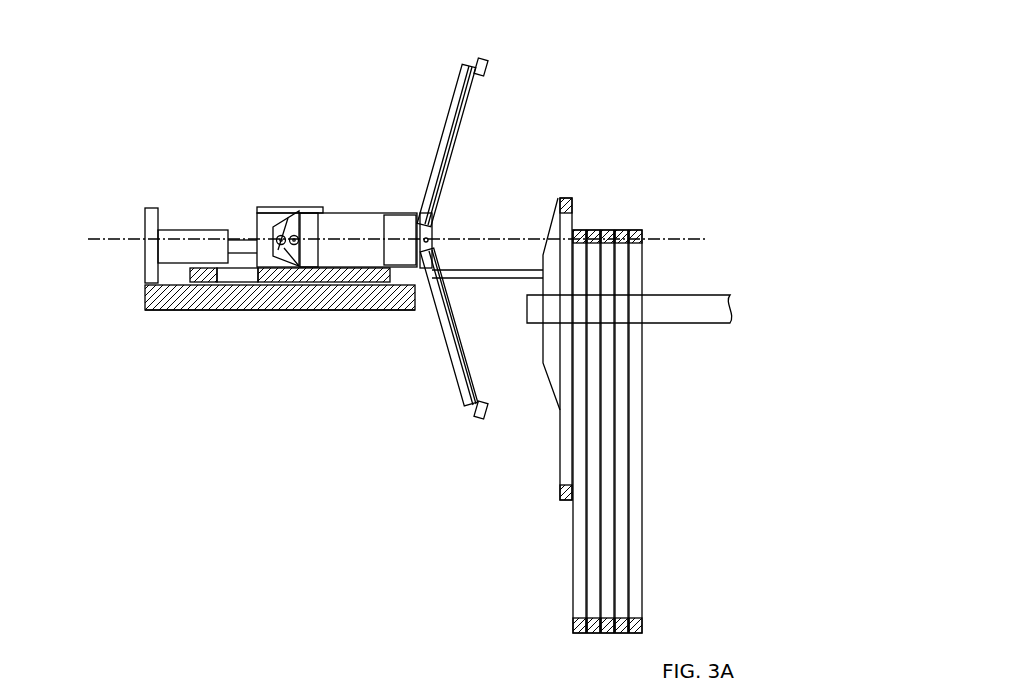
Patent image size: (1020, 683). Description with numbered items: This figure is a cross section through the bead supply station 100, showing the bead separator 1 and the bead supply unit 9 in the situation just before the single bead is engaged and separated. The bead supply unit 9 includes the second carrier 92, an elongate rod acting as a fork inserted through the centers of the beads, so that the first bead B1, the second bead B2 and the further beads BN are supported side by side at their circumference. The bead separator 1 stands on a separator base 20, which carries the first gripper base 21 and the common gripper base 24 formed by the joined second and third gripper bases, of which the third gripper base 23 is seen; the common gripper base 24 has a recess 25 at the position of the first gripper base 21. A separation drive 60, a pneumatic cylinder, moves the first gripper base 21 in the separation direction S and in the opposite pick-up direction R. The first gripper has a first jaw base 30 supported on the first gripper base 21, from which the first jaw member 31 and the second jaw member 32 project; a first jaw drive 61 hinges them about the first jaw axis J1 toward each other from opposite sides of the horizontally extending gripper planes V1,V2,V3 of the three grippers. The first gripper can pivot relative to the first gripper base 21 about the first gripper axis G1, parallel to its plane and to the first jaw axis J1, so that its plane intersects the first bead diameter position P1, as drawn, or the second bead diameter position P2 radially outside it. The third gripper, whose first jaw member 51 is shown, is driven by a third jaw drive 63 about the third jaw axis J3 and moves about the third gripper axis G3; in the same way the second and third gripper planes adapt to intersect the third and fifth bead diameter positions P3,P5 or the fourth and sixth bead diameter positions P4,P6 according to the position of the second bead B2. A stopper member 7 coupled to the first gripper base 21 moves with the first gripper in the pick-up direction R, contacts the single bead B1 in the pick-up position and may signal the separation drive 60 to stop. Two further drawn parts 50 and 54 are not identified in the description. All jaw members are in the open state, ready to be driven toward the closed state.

The bead supply station 100 is at (100, 88).
The bead separator 1 is at (192, 123).
The bead supply unit 9 is at (694, 128).
The separation drive 60 is at (178, 234).
The separation direction S is at (255, 213).
The first gripper base 21 is at (261, 211).
The third gripper base 23 is at (302, 207).
The third gripper axis G3 is at (283, 226).
The first jaw axis J1 is at (298, 240).
The first jaw base 30 is at (357, 258).
The first jaw drive 61 is at (398, 228).
The recess 25 is at (240, 310).
The first gripper axis G1 is at (294, 310).
The common gripper base 24 is at (188, 310).
The separator base 20 is at (205, 312).
The pivot bracket 50 is at (433, 218).
The third jaw drive 63 is at (430, 253).
The third jaw axis J3 is at (434, 240).
The first jaw member 31 is at (447, 116).
The first jaw member 51 is at (465, 100).
The second jaw member 32 is at (456, 372).
The lower arm guide 54 is at (455, 345).
The stopper member 7 is at (546, 362).
The first bead B1 is at (561, 484).
The second bead B2 is at (578, 590).
The further bead(s) BN is at (642, 585).
The second carrier 92 is at (695, 325).
The first bead diameter position P1 is at (565, 238).
The second bead diameter position P2 is at (560, 200).
The fourth and sixth bead diameter positions P4,P6 is at (580, 210).
The third and fifth bead diameter positions P3,P5 is at (583, 232).
The first, second and third gripper planes V1,V2,V3 is at (448, 239).
The pick-up direction R is at (533, 447).